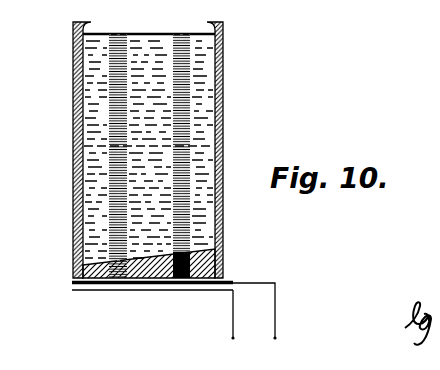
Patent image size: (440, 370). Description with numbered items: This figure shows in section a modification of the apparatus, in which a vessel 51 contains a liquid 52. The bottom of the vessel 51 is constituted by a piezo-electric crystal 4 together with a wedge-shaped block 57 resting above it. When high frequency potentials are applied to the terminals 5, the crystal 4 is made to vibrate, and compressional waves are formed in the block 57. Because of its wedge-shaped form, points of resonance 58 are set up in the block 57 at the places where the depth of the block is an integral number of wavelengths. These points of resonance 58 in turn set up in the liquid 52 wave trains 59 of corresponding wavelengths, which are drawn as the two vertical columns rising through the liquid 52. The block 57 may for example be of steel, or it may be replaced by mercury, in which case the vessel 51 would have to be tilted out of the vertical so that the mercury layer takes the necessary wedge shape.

The vessel 51 is at (75, 91).
The liquid 52 is at (203, 107).
The wave trains 59 is at (83, 145).
The points of resonance 58 is at (92, 268).
The wedge-shaped block 57 is at (228, 277).
The piezo-electric crystal 4 is at (143, 290).
The terminals 5 is at (275, 338).